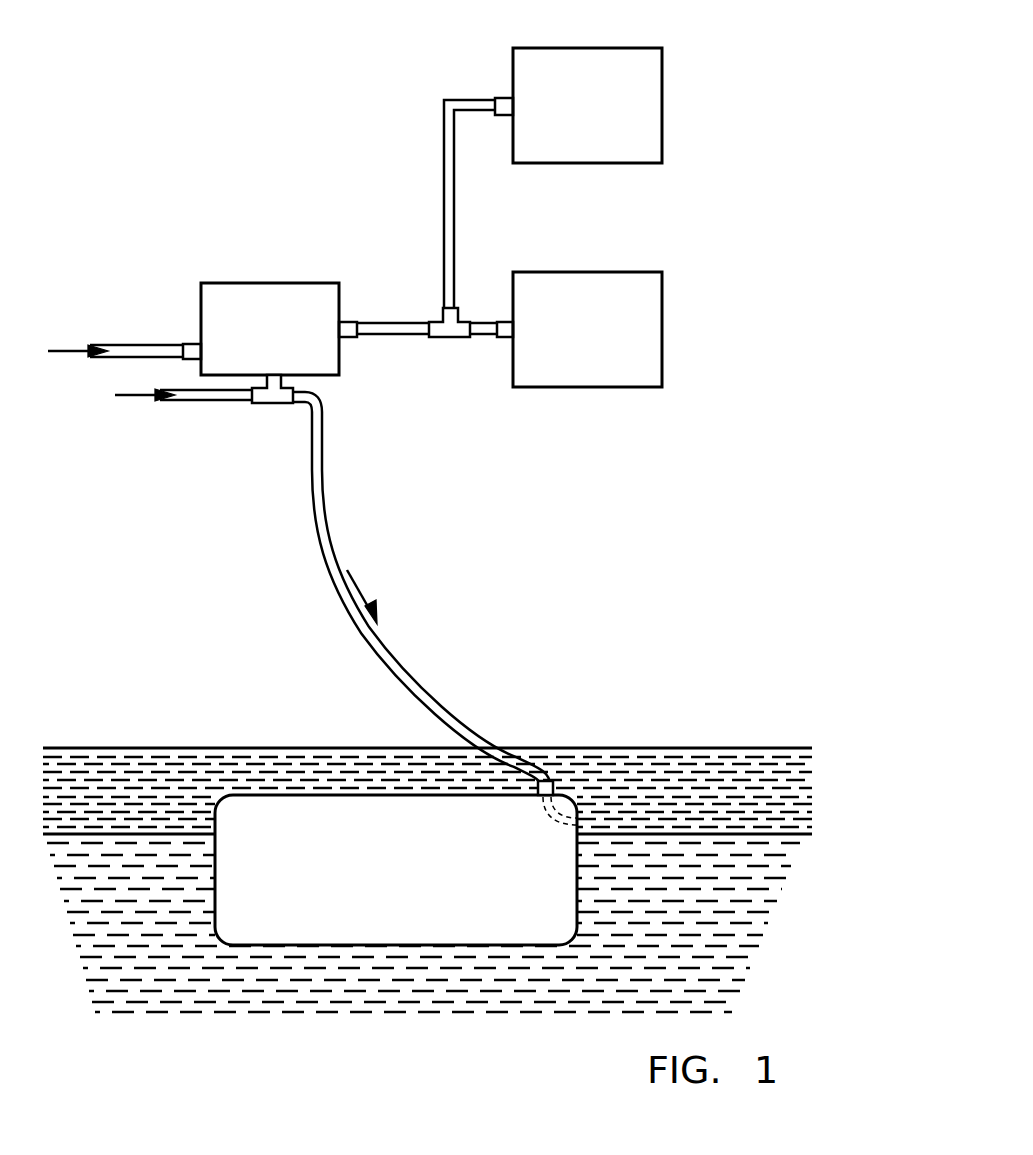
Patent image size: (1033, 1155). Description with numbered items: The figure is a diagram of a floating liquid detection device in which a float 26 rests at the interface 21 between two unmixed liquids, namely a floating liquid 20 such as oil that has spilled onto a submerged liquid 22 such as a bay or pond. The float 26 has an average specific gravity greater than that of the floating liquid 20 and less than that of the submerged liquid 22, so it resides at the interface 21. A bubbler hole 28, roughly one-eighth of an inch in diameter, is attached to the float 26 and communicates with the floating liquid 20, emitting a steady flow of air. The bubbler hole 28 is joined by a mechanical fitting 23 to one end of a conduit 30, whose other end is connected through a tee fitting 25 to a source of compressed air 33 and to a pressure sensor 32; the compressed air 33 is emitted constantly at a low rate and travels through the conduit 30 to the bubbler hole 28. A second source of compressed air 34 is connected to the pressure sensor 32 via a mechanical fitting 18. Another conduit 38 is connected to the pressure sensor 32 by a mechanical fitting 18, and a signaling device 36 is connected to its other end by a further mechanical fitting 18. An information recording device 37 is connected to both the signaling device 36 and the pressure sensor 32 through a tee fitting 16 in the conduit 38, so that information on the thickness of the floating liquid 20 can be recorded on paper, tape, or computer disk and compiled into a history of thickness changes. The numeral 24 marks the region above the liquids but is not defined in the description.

The tee fitting 16 is at (442, 338).
The mechanical fitting 18 is at (500, 98).
The floating liquid 20 is at (812, 778).
The interface 21 is at (790, 843).
The submerged liquid 22 is at (760, 951).
The mechanical fitting 23 is at (553, 782).
The atmosphere 24 is at (628, 580).
The tee fitting 25 is at (262, 404).
The float 26 is at (277, 797).
The bubbler hole 28 is at (578, 822).
The conduit 30 is at (410, 672).
The pressure sensor 32 is at (272, 283).
The source of compressed air 33 is at (166, 395).
The second source of compressed air 34 is at (96, 351).
The signaling device 36 is at (572, 272).
The information recording device 37 is at (572, 48).
The conduit 38 is at (397, 337).